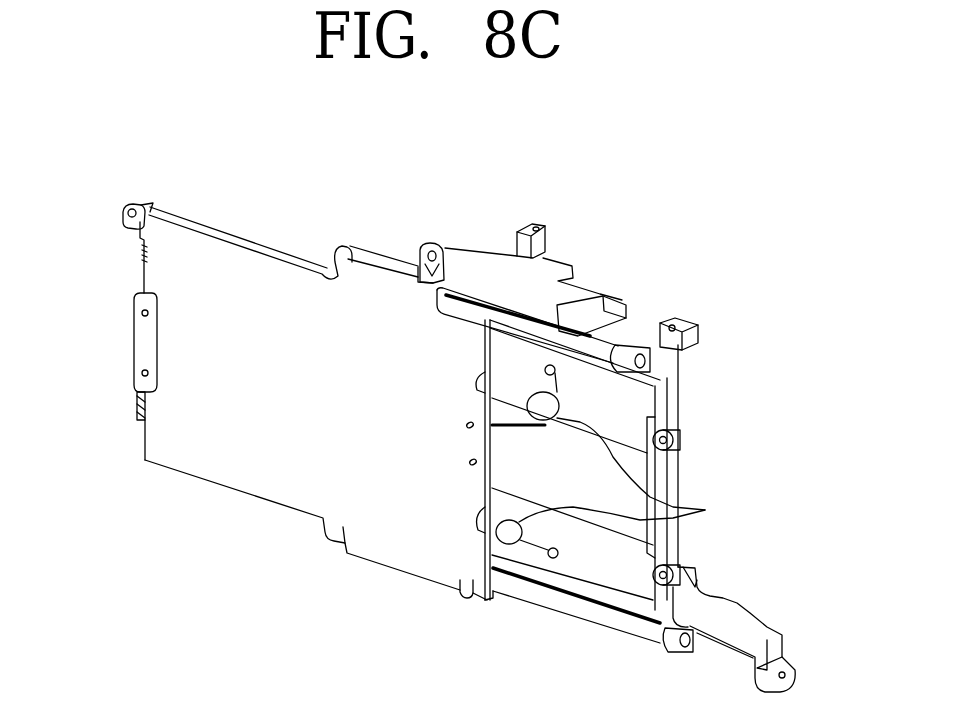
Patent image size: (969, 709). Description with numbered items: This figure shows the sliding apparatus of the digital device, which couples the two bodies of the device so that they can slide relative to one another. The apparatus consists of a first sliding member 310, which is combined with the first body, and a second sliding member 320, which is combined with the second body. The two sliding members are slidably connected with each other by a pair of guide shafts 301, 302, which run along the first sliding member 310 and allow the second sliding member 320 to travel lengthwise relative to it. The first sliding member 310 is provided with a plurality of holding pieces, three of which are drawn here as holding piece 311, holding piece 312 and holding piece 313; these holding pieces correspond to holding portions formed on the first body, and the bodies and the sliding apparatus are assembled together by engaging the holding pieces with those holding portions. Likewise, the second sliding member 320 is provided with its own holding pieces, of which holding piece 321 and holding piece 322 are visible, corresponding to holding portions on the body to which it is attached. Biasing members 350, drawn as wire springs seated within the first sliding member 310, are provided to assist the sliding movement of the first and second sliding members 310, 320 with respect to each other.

The guide shaft 301 is at (548, 330).
The guide shaft 302 is at (560, 605).
The first sliding member 310 is at (694, 477).
The holding piece 311 is at (677, 322).
The holding piece 312 is at (537, 226).
The holding piece 313 is at (795, 672).
The second sliding member 320 is at (236, 512).
The holding piece 321 is at (417, 243).
The holding piece 322 is at (127, 213).
The biasing member 350 is at (623, 461).